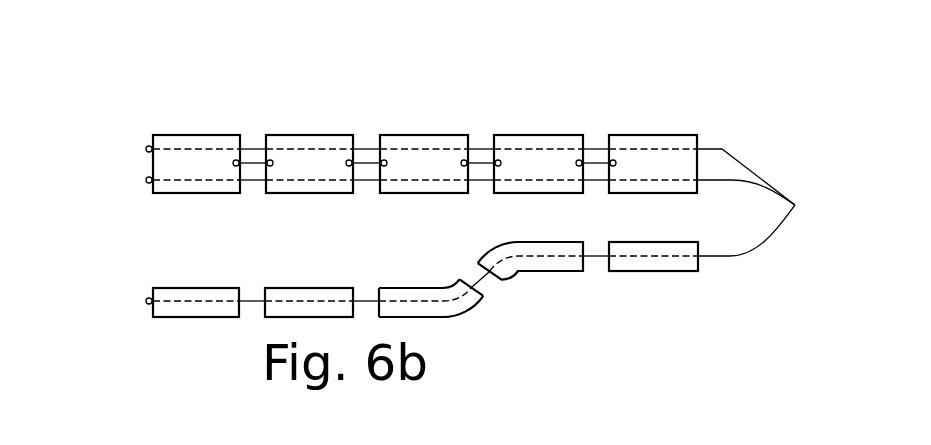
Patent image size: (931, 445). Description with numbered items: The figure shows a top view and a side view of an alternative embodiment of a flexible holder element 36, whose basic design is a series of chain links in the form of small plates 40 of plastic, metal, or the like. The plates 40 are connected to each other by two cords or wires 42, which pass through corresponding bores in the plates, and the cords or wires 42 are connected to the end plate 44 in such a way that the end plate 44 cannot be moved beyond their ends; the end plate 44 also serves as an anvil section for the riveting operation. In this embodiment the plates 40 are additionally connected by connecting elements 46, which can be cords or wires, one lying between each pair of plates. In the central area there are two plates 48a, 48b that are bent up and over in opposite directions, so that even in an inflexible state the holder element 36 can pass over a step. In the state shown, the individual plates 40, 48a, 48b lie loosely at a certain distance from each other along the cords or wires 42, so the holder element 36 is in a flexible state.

The flexible holder element 36 is at (309, 126).
The plates 40 is at (634, 248).
The cords or wires 42 is at (764, 202).
The end plate 44 is at (208, 163).
The connecting elements 46 is at (377, 138).
The plate 48a is at (437, 165).
The plate 48b is at (543, 172).